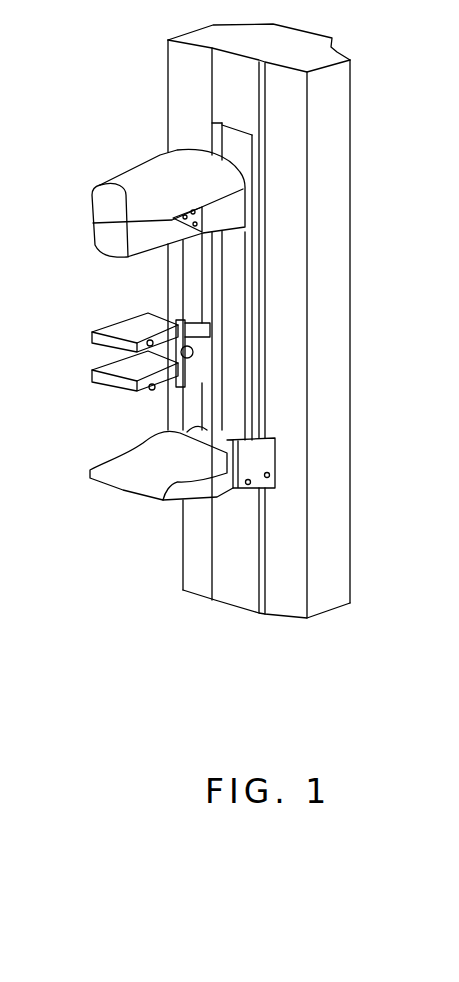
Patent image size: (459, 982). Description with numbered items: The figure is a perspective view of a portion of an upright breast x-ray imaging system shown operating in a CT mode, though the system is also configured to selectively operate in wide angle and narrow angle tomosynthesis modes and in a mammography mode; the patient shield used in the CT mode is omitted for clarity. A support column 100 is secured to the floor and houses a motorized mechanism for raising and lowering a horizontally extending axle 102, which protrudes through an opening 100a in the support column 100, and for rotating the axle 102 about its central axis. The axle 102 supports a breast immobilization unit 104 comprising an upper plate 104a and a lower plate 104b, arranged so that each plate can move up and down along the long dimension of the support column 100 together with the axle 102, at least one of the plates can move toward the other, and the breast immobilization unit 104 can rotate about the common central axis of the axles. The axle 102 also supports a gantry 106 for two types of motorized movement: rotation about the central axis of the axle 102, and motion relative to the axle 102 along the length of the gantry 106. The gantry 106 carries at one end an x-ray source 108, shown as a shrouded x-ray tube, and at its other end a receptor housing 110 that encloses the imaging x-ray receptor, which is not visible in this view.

The support column 100 is at (335, 585).
The opening 100a is at (250, 373).
The axle 102 is at (250, 327).
The breast immobilization unit 104 is at (73, 324).
The upper plate 104a is at (110, 328).
The lower plate 104b is at (110, 380).
The gantry 106 is at (230, 267).
The x-ray source 108 is at (130, 167).
The receptor housing 110 is at (142, 498).